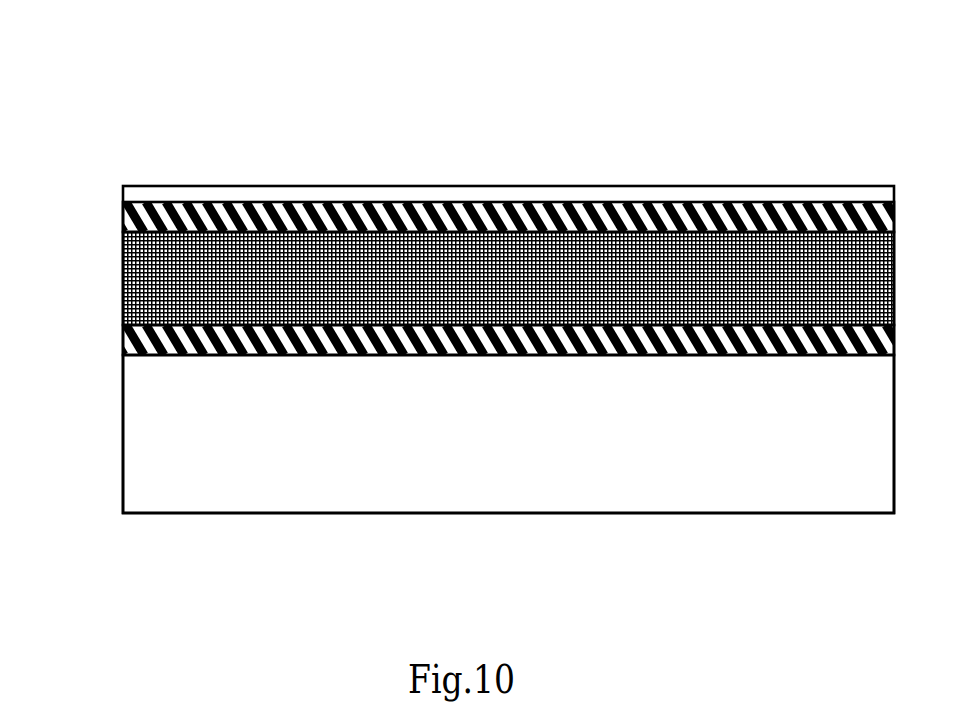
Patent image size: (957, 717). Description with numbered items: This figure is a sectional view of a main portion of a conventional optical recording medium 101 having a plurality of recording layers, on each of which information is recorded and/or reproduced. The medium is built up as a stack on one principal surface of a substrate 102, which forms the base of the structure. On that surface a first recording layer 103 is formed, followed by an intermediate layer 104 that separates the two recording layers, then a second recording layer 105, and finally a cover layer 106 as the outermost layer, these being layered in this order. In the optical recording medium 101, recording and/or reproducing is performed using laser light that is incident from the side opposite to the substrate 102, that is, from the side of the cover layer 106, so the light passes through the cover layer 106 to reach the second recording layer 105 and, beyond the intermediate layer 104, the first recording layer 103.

The optical recording medium 101 is at (161, 117).
The substrate 102 is at (140, 431).
The first recording layer 103 is at (123, 341).
The intermediate layer 104 is at (123, 272).
The second recording layer 105 is at (123, 217).
The cover layer 106 is at (123, 193).